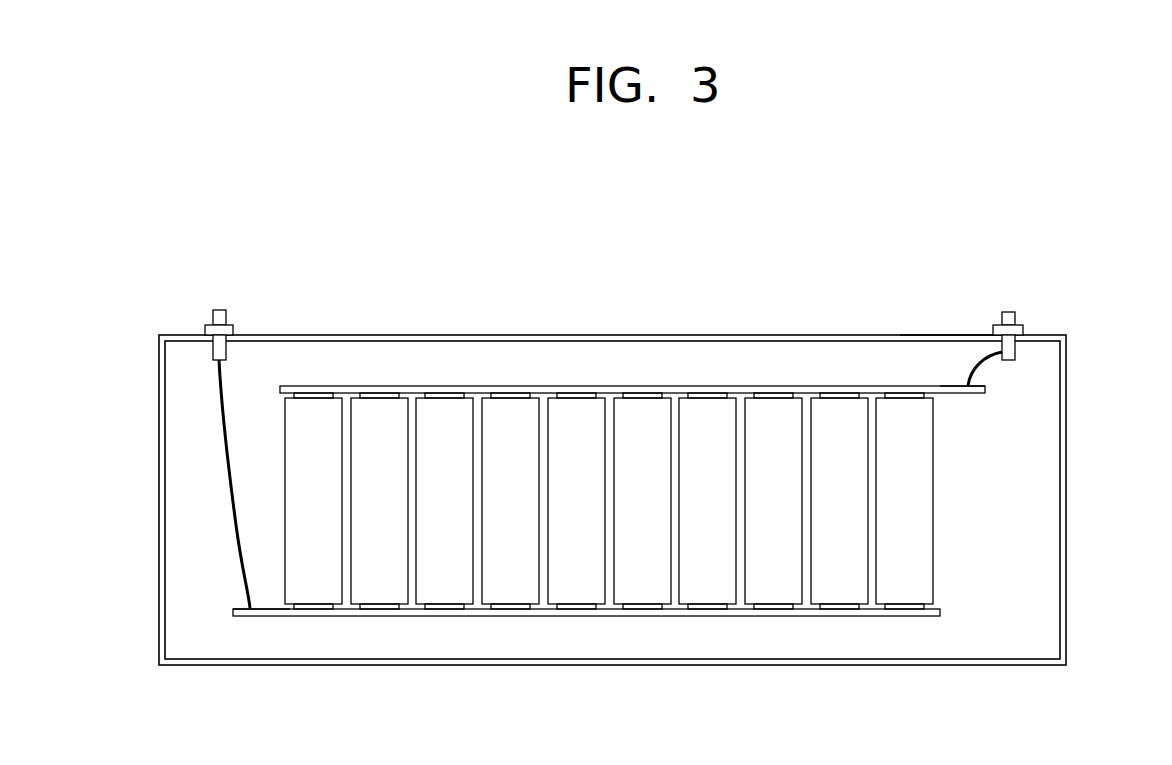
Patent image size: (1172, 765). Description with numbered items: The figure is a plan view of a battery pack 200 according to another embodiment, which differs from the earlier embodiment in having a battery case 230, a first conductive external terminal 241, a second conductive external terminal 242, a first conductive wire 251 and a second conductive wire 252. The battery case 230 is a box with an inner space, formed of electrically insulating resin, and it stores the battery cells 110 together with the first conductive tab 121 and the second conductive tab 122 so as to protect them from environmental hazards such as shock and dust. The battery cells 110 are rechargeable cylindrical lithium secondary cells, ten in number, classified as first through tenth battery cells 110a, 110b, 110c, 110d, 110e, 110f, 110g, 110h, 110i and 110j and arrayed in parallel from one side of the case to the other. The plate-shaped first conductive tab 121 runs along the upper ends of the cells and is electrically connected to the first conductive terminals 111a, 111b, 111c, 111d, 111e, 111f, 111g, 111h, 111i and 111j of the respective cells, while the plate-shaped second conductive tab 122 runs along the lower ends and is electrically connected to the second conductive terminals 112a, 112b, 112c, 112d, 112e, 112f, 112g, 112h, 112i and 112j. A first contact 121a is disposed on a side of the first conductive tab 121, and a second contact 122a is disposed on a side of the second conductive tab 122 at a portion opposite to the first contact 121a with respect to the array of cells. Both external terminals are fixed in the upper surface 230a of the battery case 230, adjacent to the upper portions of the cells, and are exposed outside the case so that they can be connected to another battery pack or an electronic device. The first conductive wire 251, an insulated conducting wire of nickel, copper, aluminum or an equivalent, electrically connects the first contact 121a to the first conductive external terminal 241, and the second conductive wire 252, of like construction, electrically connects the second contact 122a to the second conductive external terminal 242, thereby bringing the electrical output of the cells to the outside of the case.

The battery pack 200 is at (103, 250).
The battery case 230 is at (178, 335).
The upper surface of the battery case 230a is at (973, 335).
The first conductive external terminal 241 is at (1016, 318).
The second conductive external terminal 242 is at (238, 327).
The first conductive wire 251 is at (982, 370).
The second conductive wire 252 is at (236, 525).
The first conductive tab 121 is at (962, 402).
The first contact 121a is at (982, 380).
The second conductive tab 122 is at (934, 625).
The second contact 122a is at (248, 608).
The battery cells 110 is at (278, 465).
The first battery cell 110a is at (313, 501).
The second battery cell 110b is at (379, 501).
The third battery cell 110c is at (444, 501).
The fourth battery cell 110d is at (510, 501).
The fifth battery cell 110e is at (615, 498).
The sixth battery cell 110f is at (642, 501).
The seventh battery cell 110g is at (707, 501).
The eighth battery cell 110h is at (773, 501).
The ninth battery cell 110i is at (839, 501).
The tenth battery cell 110j is at (904, 501).
The first conductive terminal of the first battery cell 111a is at (314, 393).
The first conductive terminal of the second battery cell 111b is at (380, 393).
The first conductive terminal of the third battery cell 111c is at (444, 393).
The first conductive terminal of the fourth battery cell 111d is at (510, 393).
The first conductive terminal of the fifth battery cell 111e is at (576, 393).
The first conductive terminal of the sixth battery cell 111f is at (642, 393).
The first conductive terminal of the seventh battery cell 111g is at (708, 393).
The first conductive terminal of the eighth battery cell 111h is at (774, 393).
The first conductive terminal of the ninth battery cell 111i is at (840, 393).
The first conductive terminal of the tenth battery cell 111j is at (904, 393).
The second conductive terminal of the first battery cell 112a is at (314, 609).
The second conductive terminal of the second battery cell 112b is at (380, 609).
The second conductive terminal of the third battery cell 112c is at (444, 609).
The second conductive terminal of the fourth battery cell 112d is at (510, 609).
The second conductive terminal of the fifth battery cell 112e is at (576, 609).
The second conductive terminal of the sixth battery cell 112f is at (642, 609).
The second conductive terminal of the seventh battery cell 112g is at (708, 609).
The second conductive terminal of the eighth battery cell 112h is at (774, 609).
The second conductive terminal of the ninth battery cell 112i is at (840, 609).
The second conductive terminal of the tenth battery cell 112j is at (904, 609).